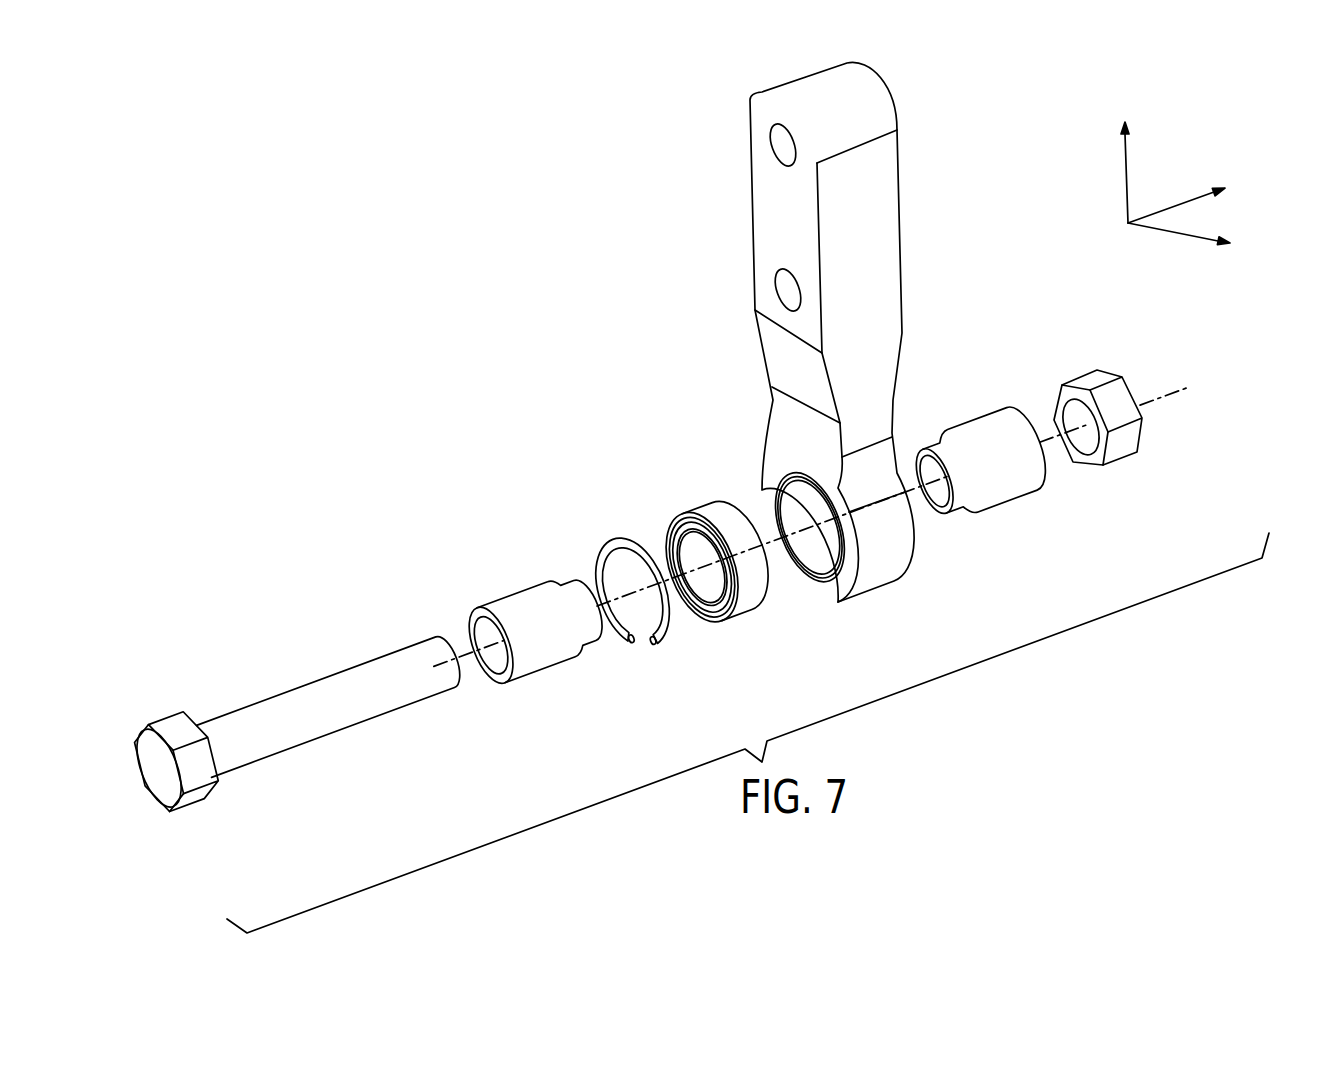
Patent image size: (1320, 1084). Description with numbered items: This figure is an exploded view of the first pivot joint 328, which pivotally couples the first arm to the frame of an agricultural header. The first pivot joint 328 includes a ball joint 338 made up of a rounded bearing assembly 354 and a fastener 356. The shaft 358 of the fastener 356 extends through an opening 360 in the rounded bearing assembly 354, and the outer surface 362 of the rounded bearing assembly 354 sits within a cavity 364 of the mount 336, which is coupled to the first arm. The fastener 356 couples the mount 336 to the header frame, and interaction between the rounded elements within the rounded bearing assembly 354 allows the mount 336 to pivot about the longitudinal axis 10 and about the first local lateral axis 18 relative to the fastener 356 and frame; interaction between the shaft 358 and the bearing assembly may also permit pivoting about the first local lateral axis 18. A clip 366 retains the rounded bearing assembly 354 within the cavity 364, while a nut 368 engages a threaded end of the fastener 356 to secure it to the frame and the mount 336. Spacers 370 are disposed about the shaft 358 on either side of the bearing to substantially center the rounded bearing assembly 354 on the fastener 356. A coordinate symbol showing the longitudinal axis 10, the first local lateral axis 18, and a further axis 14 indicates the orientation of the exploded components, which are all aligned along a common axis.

The longitudinal axis 10 is at (1170, 235).
The vertical axis 14 is at (1125, 178).
The first local lateral axis 18 is at (1183, 198).
The first pivot joint 328 is at (857, 374).
The mount 336 is at (898, 230).
The ball joint 338 is at (661, 565).
The rounded bearing assembly 354 is at (750, 593).
The fastener 356 is at (283, 677).
The shaft 358 is at (332, 732).
The opening 360 is at (688, 545).
The outer surface 362 is at (703, 503).
The cavity 364 is at (802, 480).
The clip 366 is at (673, 627).
The nut 368 is at (1120, 462).
The spacers 370 is at (538, 668).